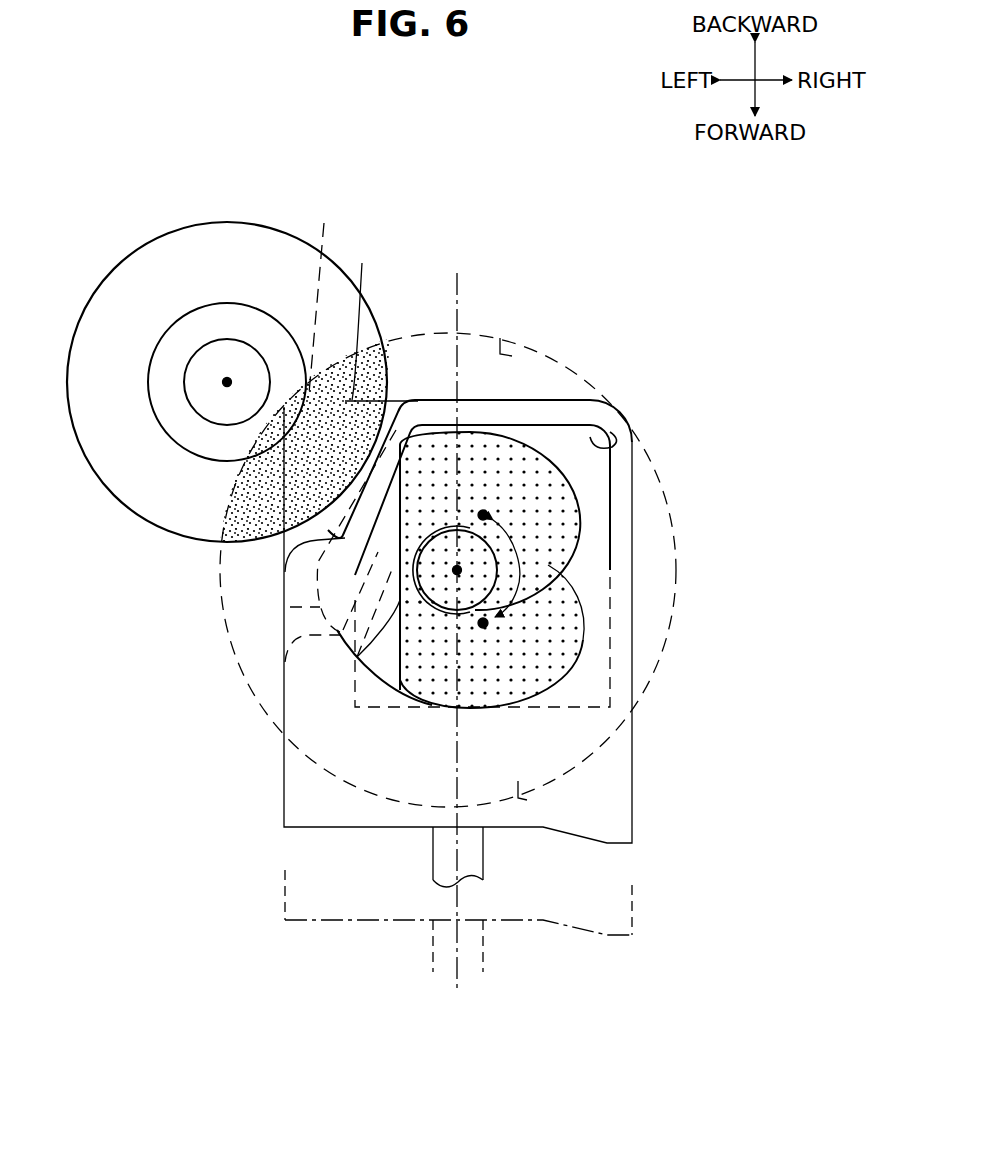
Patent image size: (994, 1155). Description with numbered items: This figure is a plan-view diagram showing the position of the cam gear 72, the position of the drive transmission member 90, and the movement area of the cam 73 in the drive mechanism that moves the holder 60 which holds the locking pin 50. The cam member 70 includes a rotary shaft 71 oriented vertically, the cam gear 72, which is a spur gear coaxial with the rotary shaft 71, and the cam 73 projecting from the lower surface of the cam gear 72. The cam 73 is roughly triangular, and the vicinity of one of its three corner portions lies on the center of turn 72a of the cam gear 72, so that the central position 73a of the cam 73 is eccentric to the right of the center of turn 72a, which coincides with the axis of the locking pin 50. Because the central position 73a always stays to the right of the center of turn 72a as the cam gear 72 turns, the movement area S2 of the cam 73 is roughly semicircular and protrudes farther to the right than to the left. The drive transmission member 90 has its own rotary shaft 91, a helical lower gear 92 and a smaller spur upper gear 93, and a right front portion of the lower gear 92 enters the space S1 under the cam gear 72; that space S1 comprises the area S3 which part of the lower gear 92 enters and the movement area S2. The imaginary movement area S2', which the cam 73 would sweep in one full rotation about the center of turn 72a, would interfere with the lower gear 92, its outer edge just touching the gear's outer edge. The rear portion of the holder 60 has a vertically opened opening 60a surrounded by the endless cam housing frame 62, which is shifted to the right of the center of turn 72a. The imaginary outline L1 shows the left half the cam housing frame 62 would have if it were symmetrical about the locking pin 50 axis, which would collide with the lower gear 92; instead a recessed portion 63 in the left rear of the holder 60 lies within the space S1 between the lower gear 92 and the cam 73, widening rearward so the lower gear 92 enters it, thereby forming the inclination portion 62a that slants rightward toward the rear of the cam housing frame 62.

The locking pin 50 is at (433, 852).
The holder 60 is at (282, 805).
The opening 60a is at (605, 445).
The cam housing frame 62 is at (490, 410).
The inclination portion 62a is at (381, 313).
The recessed portion 63 is at (335, 530).
The cam member 70 is at (637, 427).
The rotary shaft 71 is at (357, 666).
The cam gear 72 is at (432, 330).
The center of turn 72a is at (457, 570).
The cam 73 is at (553, 463).
The central position 73a is at (483, 515).
The drive transmission member 90 is at (227, 344).
The rotary shaft 91 is at (232, 352).
The lower gear 92 is at (205, 238).
The upper gear 93 is at (170, 345).
The imaginary outline L1 is at (325, 295).
The space S1 is at (548, 350).
The movement area S2 is at (546, 705).
The imaginary movement area S2' is at (281, 559).
The area S3 is at (392, 395).